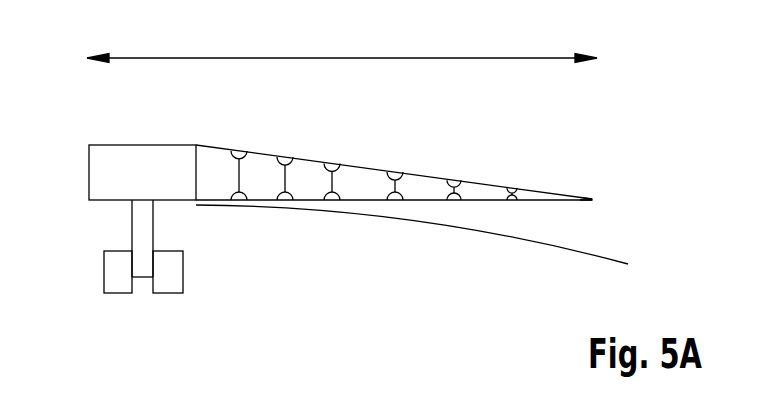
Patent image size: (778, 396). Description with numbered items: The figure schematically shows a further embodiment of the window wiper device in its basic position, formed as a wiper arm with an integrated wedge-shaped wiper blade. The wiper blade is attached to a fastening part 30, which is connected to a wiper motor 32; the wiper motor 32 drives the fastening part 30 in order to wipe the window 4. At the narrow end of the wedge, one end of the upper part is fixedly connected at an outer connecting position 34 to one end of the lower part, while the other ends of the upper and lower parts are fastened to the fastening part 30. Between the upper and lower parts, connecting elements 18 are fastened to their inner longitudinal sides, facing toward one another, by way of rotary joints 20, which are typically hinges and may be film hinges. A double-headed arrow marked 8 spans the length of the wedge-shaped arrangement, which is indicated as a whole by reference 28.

The window 4 is at (585, 255).
The length of array 8 is at (356, 57).
The connecting element 18 is at (241, 170).
The rotary joint 20 is at (238, 150).
The wedge-shaped transducer array 28 is at (515, 132).
The fastening part 30 is at (97, 170).
The wiper motor 32 is at (112, 270).
The outer connecting position 34 is at (596, 198).